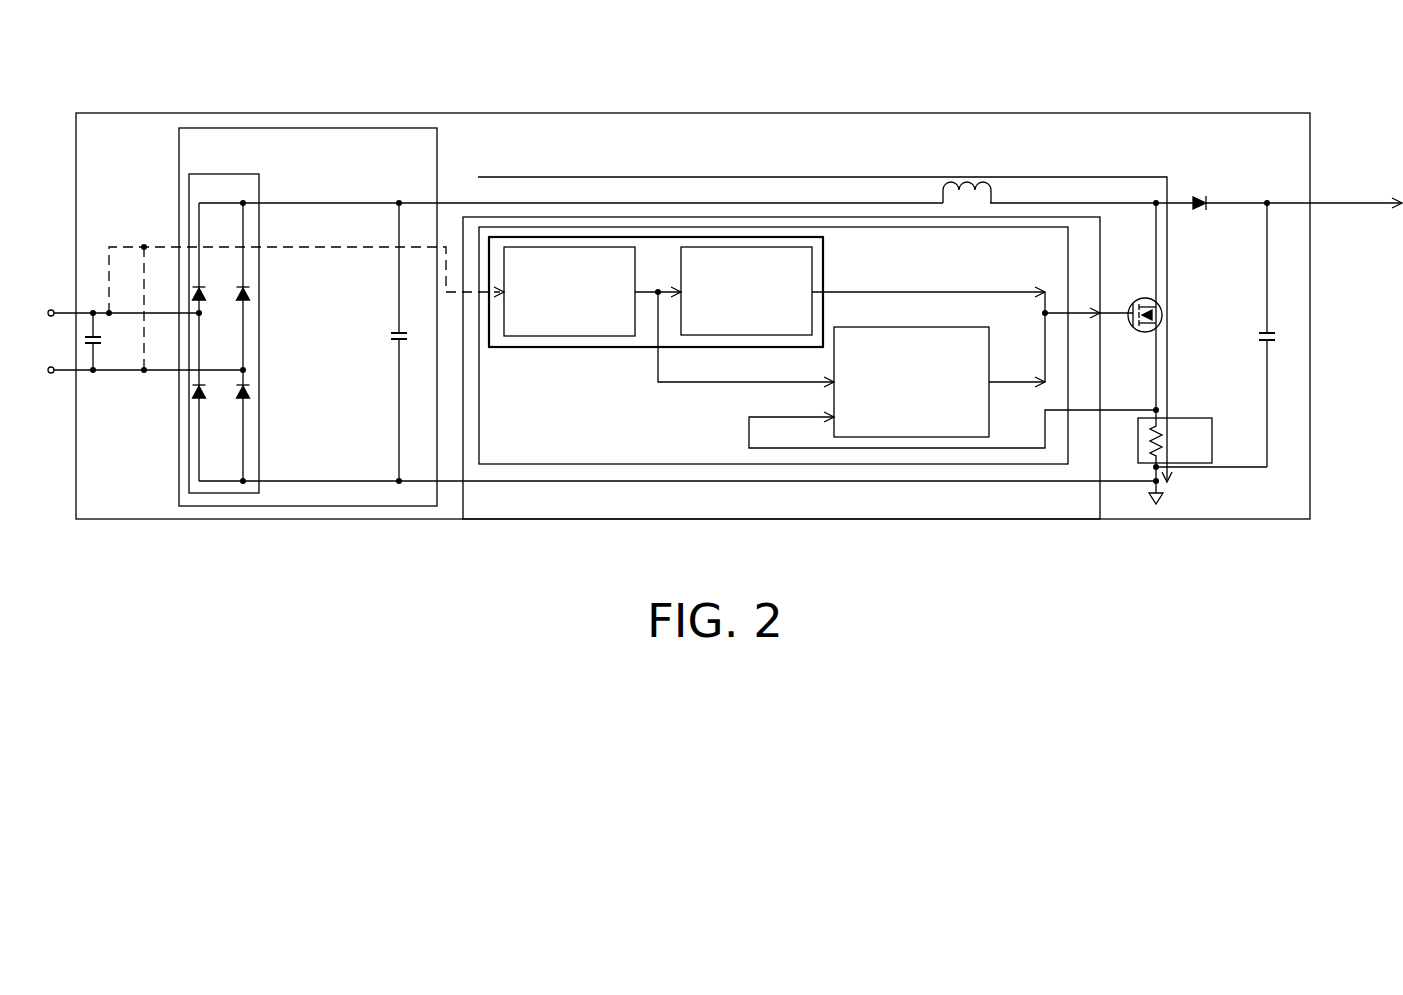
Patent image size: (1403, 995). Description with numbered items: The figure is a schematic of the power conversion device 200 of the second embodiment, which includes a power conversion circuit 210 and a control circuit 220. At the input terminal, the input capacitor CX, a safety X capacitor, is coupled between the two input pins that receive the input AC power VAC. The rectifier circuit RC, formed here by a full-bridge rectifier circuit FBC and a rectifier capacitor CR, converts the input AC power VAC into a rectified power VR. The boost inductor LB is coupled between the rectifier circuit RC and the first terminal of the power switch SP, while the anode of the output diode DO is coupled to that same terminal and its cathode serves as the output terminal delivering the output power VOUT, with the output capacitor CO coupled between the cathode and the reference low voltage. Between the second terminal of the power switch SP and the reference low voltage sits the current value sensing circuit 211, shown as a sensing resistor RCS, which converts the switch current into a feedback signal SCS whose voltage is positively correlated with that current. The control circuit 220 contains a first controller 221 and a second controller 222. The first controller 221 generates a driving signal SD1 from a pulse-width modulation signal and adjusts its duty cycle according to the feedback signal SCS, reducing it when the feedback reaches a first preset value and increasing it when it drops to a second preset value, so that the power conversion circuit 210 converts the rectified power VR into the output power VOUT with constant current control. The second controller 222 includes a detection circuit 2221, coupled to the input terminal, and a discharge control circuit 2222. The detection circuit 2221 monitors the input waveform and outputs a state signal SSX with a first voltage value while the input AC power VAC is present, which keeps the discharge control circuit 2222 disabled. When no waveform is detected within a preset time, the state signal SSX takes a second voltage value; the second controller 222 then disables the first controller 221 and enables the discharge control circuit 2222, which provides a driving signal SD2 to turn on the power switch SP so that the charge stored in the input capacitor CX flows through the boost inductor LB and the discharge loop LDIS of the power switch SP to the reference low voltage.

The power conversion device 200 is at (1401, 551).
The power conversion circuit 210 is at (823, 113).
The current value sensing circuit 211 is at (1212, 440).
The control circuit 220 is at (507, 464).
The first controller 221 is at (903, 437).
The second controller 222 is at (613, 347).
The detection circuit 2221 is at (578, 247).
The discharge control circuit 2222 is at (748, 247).
The full-bridge rectifier circuit FBC is at (222, 174).
The rectifier circuit RC is at (437, 165).
The input AC power VAC is at (138, 341).
The input capacitor CX is at (107, 341).
The rectified power VR is at (696, 327).
The rectifier capacitor CR is at (384, 342).
The discharge loop LDIS is at (1082, 177).
The boost inductor LB is at (967, 200).
The output diode DO is at (1296, 219).
The output power VOUT is at (1366, 189).
The output capacitor CO is at (1230, 335).
The power switch SP is at (1117, 310).
The sensing resistor RCS is at (1175, 455).
The state signal SSX is at (734, 326).
The driving signal SD2 is at (928, 320).
The driving signal SD1 is at (1017, 367).
The feedback signal SCS is at (931, 429).